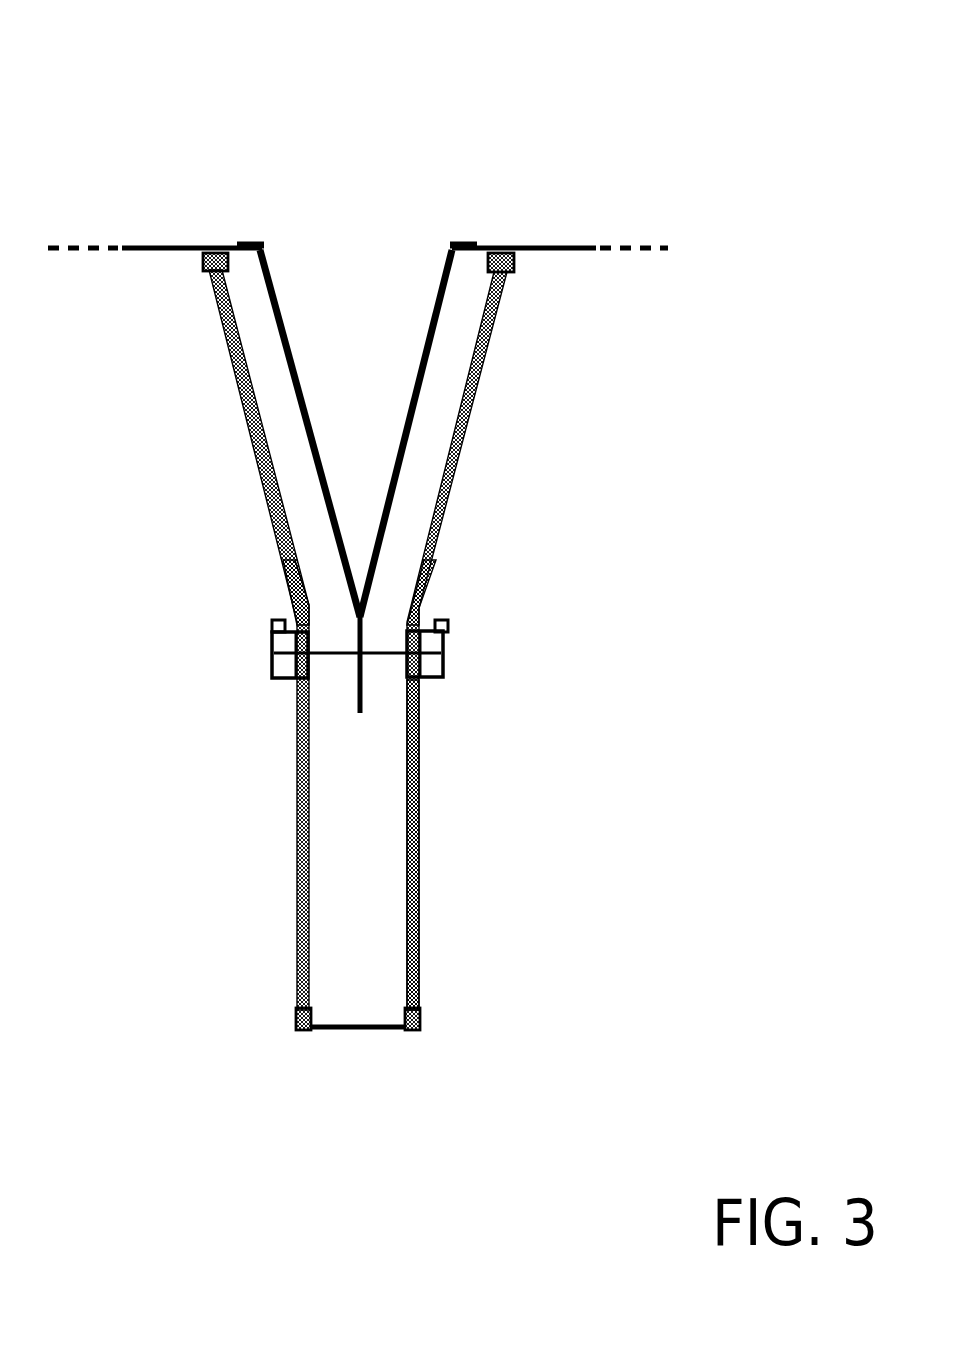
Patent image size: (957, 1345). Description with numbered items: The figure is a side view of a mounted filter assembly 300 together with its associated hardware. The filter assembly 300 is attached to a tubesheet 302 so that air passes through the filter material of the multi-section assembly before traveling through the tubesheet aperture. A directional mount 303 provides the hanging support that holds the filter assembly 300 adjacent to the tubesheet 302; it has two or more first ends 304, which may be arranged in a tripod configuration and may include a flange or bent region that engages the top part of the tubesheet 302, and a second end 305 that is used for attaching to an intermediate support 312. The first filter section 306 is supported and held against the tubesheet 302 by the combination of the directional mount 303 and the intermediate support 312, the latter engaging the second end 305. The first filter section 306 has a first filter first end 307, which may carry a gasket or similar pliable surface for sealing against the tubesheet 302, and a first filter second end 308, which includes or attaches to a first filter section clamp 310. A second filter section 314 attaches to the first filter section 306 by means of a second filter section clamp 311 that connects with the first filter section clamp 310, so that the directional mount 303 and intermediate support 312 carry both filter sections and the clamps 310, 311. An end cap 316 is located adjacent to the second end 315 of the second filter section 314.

The filter assembly 300 is at (352, 125).
The tubesheet 302 is at (558, 247).
The directional mount 303 is at (410, 427).
The first ends 304 is at (282, 300).
The second end 305 is at (360, 713).
The first filter section 306 is at (470, 428).
The first filter first end 307 is at (218, 300).
The first filter second end 308 is at (287, 578).
The first filter section clamp 310 is at (290, 645).
The second filter section clamp 311 is at (283, 662).
The intermediate support 312 is at (335, 657).
The second filter section 314 is at (415, 880).
The second end of the second filter section 315 is at (417, 1000).
The end cap 316 is at (367, 1023).